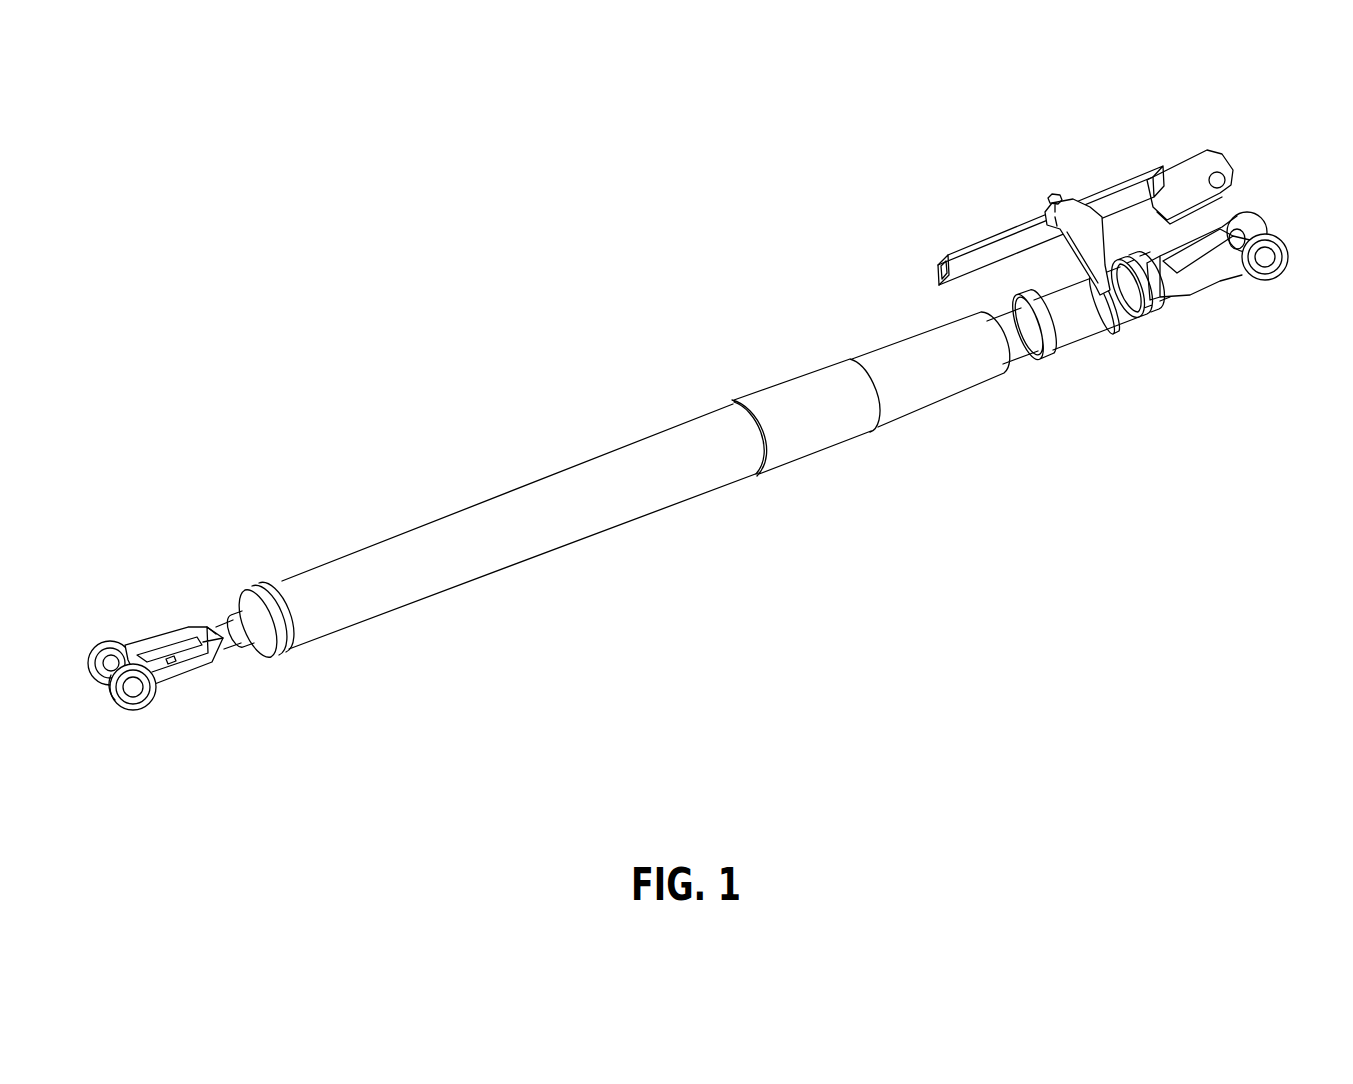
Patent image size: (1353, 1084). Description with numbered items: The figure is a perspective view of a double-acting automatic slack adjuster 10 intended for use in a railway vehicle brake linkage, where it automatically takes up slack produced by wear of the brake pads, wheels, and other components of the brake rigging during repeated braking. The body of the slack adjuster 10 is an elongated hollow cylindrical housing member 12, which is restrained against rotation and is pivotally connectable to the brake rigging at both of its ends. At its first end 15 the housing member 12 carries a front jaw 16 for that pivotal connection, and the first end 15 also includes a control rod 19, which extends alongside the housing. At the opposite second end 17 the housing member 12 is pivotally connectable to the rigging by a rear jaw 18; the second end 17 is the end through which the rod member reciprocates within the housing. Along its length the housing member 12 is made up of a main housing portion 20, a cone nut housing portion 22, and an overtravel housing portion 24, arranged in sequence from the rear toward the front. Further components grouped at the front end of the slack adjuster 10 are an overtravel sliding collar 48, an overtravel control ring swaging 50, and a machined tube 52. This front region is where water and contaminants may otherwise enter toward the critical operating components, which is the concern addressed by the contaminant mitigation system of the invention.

The double-acting slack adjuster 10 is at (232, 485).
The housing member 12 is at (610, 467).
The first end 15 is at (993, 363).
The front jaw 16 is at (1217, 280).
The second end 17 is at (297, 623).
The rear jaw 18 is at (160, 640).
The control rod 19 is at (1127, 197).
The main housing portion 20 is at (523, 563).
The cone nut housing portion 22 is at (805, 458).
The overtravel housing portion 24 is at (933, 390).
The overtravel sliding collar 48 is at (1087, 233).
The overtravel control ring swaging 50 is at (1045, 362).
The machined tube 52 is at (1077, 330).